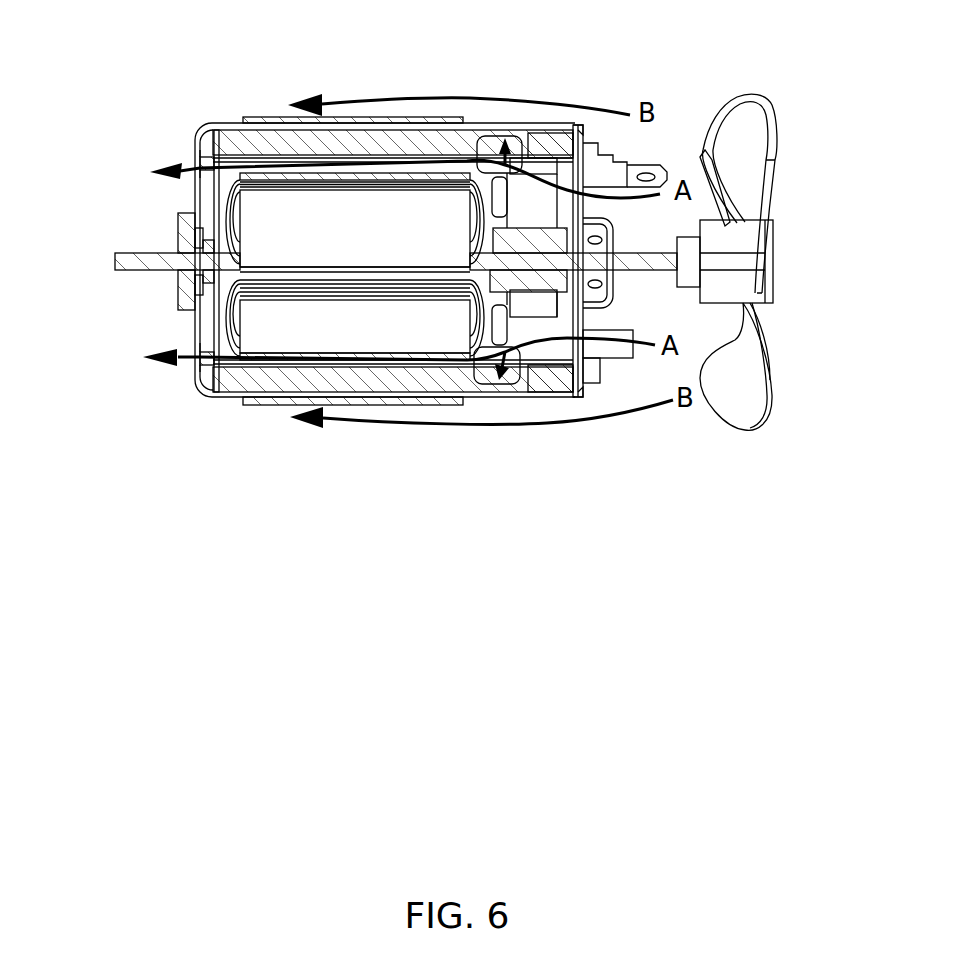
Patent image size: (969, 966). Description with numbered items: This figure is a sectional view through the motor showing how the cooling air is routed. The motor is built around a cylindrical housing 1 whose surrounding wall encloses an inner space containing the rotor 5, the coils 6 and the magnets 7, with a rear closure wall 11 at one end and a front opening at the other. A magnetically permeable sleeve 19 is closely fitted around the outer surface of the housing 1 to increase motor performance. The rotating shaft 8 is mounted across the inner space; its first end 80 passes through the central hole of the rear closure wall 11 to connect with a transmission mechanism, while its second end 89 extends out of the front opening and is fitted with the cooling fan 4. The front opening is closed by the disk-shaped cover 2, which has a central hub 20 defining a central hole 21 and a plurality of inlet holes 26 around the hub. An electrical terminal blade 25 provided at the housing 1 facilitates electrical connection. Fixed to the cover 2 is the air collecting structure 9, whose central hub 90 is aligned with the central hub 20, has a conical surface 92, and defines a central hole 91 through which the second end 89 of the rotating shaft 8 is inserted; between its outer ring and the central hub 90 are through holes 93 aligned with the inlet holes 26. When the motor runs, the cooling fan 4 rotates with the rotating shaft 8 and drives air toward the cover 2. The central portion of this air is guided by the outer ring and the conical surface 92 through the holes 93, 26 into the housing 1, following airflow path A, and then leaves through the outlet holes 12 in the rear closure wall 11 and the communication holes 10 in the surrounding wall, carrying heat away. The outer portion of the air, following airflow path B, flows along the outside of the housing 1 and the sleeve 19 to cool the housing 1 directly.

The cylindrical housing 1 is at (233, 398).
The cover 2 is at (549, 397).
The cooling fan 4 is at (757, 413).
The rotor 5 is at (225, 262).
The coils 6 is at (232, 291).
The magnets 7 is at (372, 387).
The rotating shaft 8 is at (714, 222).
The air collecting structure 9 is at (703, 374).
The communication holes 10 is at (494, 148).
The rear closure wall 11 is at (197, 197).
The outlet holes 12 is at (197, 142).
The magnetically permeable sleeve 19 is at (279, 406).
The central hub 20 is at (618, 292).
The central hole 21 is at (630, 290).
The electrical terminal blade 25 is at (660, 165).
The inlet holes 26 is at (575, 397).
The first end 80 is at (143, 258).
The second end 89 is at (674, 250).
The central hub 90 is at (758, 297).
The central hole 91 is at (674, 276).
The conical surface 92 is at (743, 318).
The through holes 93 is at (593, 345).